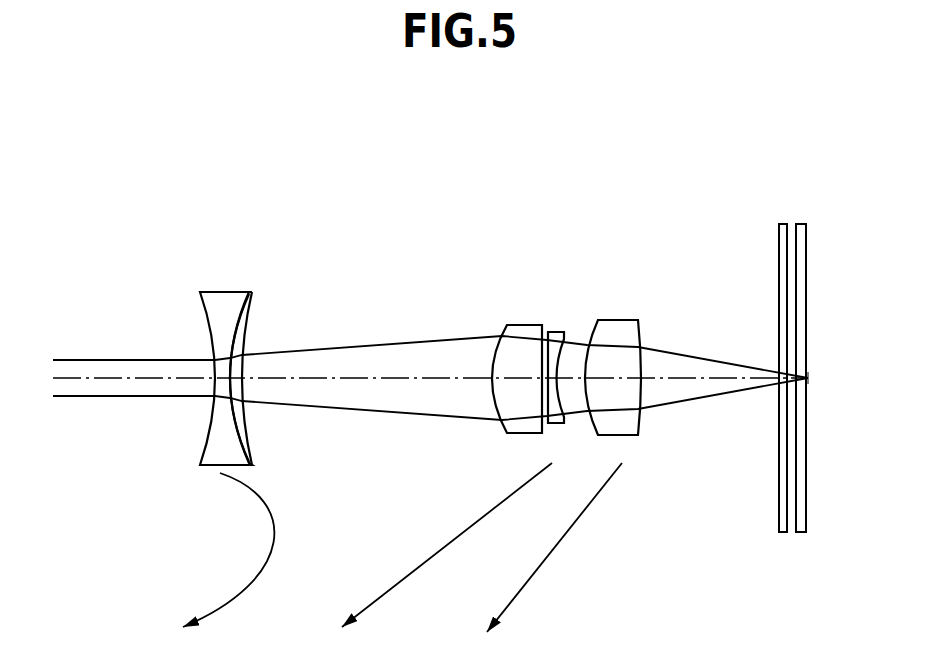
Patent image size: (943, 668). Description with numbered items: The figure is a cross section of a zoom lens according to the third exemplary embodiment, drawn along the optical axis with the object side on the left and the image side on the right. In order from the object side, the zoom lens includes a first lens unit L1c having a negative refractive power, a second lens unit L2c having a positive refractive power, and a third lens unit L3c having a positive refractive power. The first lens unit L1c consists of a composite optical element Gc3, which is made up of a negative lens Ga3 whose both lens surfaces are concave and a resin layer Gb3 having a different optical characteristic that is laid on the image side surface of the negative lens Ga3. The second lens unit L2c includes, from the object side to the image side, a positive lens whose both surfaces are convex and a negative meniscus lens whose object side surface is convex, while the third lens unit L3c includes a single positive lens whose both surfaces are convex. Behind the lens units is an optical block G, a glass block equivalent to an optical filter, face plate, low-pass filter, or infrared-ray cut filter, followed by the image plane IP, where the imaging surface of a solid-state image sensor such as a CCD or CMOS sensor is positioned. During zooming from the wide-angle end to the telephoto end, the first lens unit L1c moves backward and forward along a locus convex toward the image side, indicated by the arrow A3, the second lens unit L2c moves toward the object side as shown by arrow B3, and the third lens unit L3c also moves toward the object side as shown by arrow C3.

The first lens unit L1c is at (232, 352).
The composite optical element Gc3 is at (232, 369).
The negative lens Ga3 is at (208, 452).
The resin layer Gb3 is at (238, 411).
The second lens unit L2c is at (580, 307).
The third lens unit L3c is at (646, 293).
The optical block G is at (820, 223).
The image plane IP is at (810, 385).
The locus of first lens unit A3 is at (228, 550).
The movement of second lens unit B3 is at (447, 545).
The movement of third lens unit C3 is at (554, 547).